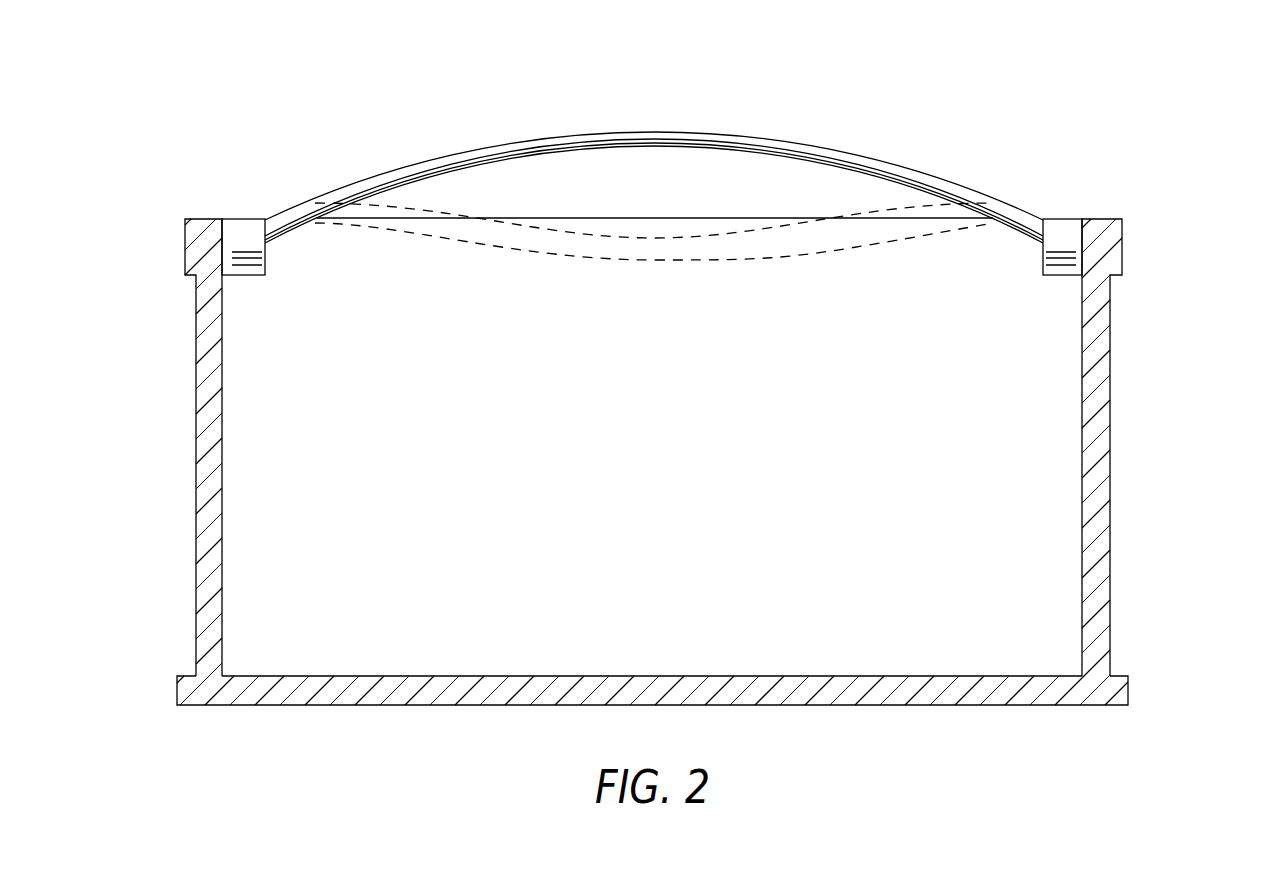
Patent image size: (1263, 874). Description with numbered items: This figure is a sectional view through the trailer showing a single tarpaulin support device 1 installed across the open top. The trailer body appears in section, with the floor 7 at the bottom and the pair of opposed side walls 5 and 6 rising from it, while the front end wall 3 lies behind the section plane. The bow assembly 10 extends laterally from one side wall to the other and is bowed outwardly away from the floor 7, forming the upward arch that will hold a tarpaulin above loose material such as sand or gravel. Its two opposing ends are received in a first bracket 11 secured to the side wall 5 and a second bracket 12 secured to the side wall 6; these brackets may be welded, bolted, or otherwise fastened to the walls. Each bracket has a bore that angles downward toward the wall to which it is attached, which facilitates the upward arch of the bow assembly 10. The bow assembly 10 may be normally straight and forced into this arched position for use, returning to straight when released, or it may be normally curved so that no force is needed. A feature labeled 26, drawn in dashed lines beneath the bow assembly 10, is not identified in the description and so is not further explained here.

The tarpaulin support device 1 is at (912, 170).
The front end wall 3 is at (667, 475).
The side wall 5 is at (200, 387).
The side wall 6 is at (1110, 482).
The floor 7 is at (912, 690).
The bow assembly 10 is at (675, 134).
The first bracket 11 is at (247, 225).
The second bracket 12 is at (1058, 222).
The deflected membrane position 26 is at (640, 258).